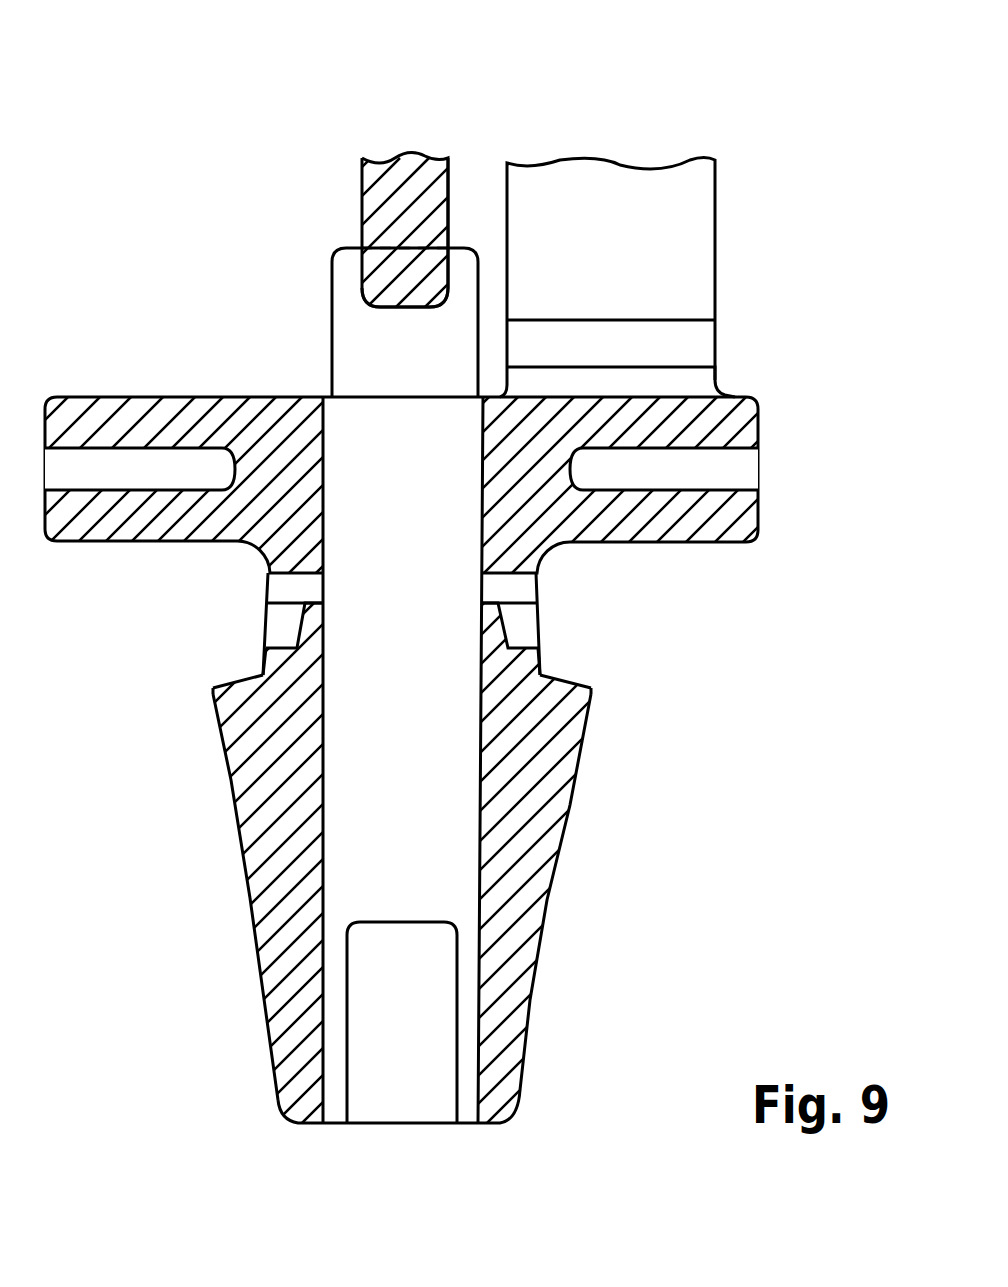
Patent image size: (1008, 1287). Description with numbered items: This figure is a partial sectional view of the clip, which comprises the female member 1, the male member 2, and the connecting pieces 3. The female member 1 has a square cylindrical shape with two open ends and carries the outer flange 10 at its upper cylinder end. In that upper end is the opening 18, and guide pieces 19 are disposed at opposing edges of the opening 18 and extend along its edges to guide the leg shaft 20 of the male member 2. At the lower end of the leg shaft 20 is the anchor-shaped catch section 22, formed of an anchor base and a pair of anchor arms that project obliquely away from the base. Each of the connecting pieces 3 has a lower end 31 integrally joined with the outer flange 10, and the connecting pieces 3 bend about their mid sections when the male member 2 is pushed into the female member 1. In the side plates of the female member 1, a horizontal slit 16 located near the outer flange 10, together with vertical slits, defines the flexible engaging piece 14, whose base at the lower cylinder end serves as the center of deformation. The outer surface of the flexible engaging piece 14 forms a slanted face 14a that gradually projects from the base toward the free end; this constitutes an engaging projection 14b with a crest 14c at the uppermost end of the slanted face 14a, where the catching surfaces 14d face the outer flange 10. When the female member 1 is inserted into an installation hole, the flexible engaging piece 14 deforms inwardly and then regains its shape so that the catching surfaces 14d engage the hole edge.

The female member 1 is at (505, 1040).
The male member 2 is at (400, 167).
The leg shaft 20 is at (405, 232).
The anchor-shaped catch section 22 is at (362, 213).
The guide pieces 19 is at (460, 272).
The opening 18 is at (372, 397).
The connecting pieces 3 is at (675, 205).
The lower end 31 is at (677, 387).
The outer flange 10 is at (742, 517).
The horizontal slit 16 is at (285, 582).
The flexible engaging piece 14 is at (272, 905).
The slanted face 14a is at (230, 797).
The engaging projection 14b is at (213, 705).
The crest 14c is at (210, 718).
The catching surfaces 14d is at (243, 675).